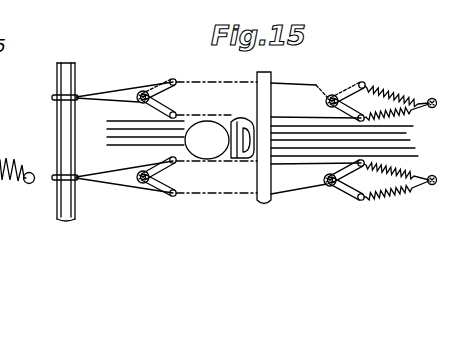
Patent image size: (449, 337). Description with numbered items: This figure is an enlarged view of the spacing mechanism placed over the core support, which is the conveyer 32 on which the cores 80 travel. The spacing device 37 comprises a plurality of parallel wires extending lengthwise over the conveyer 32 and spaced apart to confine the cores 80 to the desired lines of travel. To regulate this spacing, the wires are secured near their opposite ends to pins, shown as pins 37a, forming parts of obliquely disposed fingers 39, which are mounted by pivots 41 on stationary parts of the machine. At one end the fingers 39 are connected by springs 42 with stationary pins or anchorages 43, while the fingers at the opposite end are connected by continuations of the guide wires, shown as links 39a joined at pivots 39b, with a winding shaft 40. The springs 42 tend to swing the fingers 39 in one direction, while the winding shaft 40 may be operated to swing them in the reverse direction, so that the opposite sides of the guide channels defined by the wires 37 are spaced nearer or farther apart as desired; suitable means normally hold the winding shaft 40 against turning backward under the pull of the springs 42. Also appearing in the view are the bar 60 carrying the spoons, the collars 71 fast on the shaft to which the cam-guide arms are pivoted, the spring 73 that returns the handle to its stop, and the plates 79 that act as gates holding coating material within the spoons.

The conveyer 32 is at (398, 133).
The spacing device 37 is at (310, 87).
The pivot pin 37a is at (177, 62).
The fingers 39 is at (167, 172).
The link 39a is at (116, 96).
The pivot 39b is at (72, 98).
The winding shaft 40 is at (72, 63).
The pivots 41 is at (142, 91).
The springs 42 is at (378, 88).
The stationary pins or anchorages 43 is at (431, 98).
The bars 60 is at (271, 176).
The collars 71 is at (257, 194).
The spring 73 is at (9, 160).
The plates 79 is at (225, 122).
The cores 80 is at (202, 121).